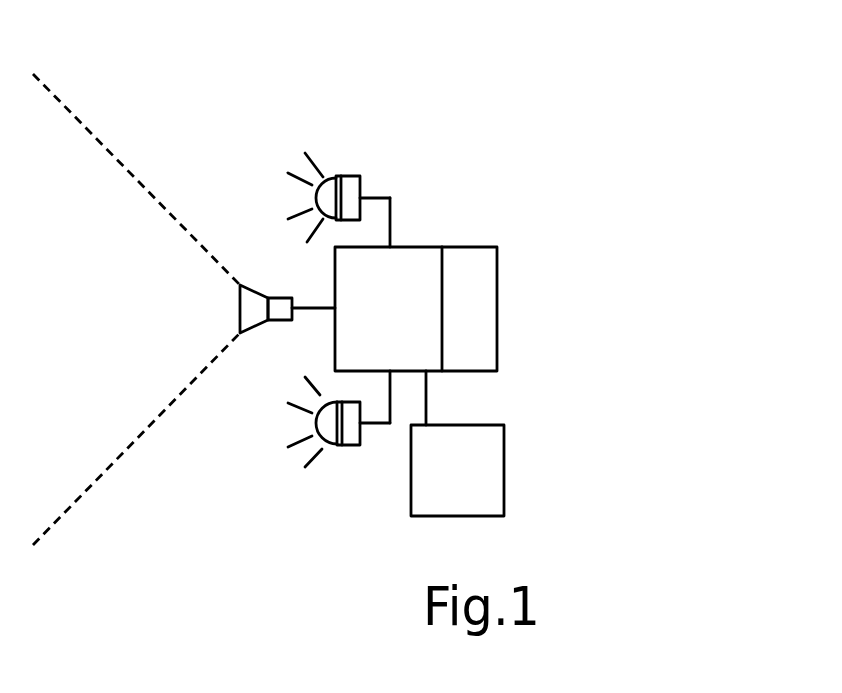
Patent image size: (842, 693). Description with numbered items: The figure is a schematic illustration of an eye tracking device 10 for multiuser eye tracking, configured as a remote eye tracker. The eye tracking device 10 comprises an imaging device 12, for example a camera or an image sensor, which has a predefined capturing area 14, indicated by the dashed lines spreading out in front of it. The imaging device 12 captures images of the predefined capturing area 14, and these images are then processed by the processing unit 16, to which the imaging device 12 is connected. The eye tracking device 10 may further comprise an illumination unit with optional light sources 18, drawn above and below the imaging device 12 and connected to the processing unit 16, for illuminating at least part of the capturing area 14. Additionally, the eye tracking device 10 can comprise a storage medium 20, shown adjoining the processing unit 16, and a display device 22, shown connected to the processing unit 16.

The eye tracking device 10 is at (464, 94).
The imaging device 12 is at (253, 323).
The predefined capturing area 14 is at (160, 228).
The processing unit 16 is at (410, 322).
The light sources 18 is at (351, 183).
The storage medium 20 is at (477, 308).
The display device 22 is at (475, 486).